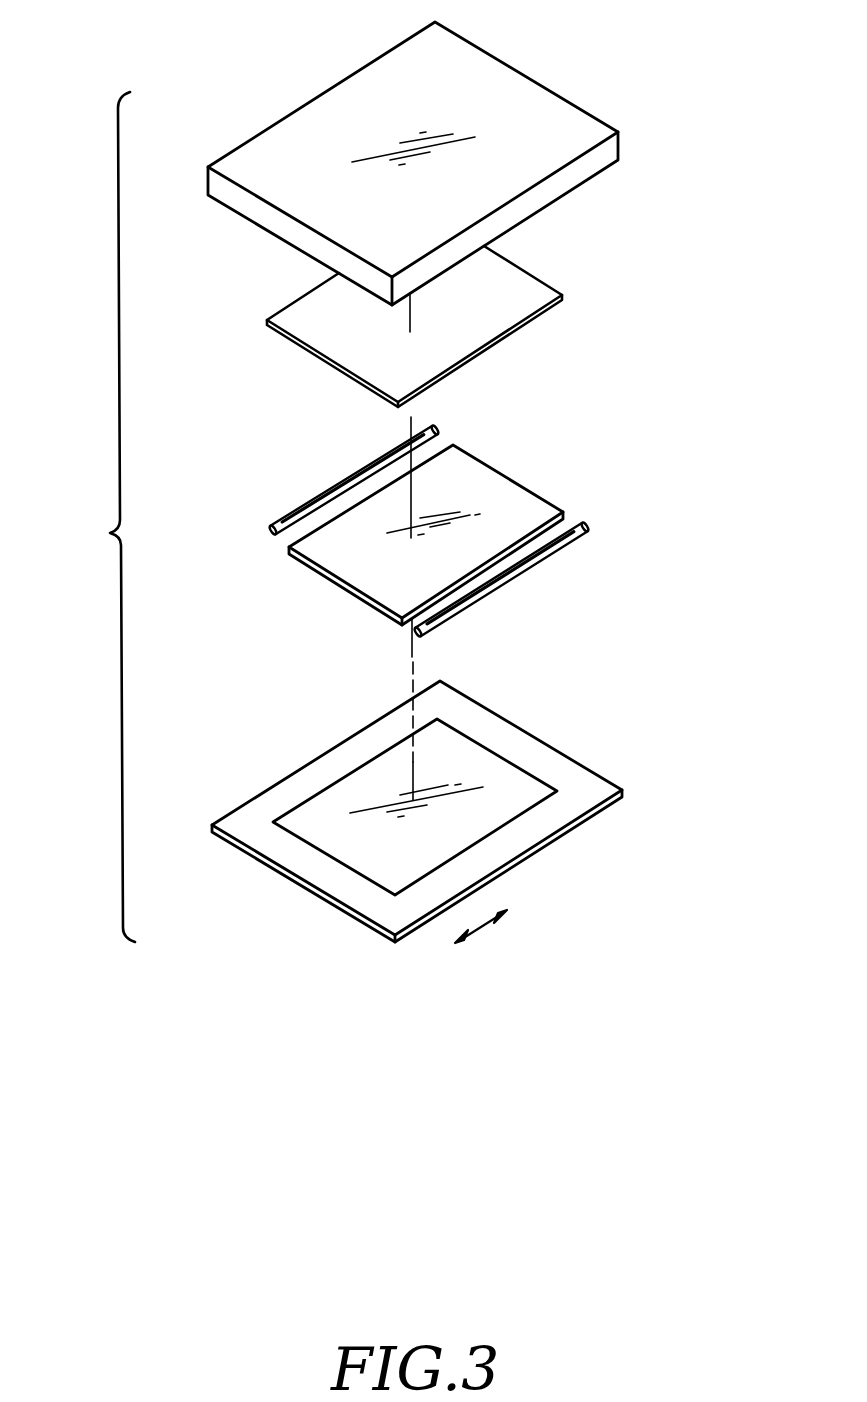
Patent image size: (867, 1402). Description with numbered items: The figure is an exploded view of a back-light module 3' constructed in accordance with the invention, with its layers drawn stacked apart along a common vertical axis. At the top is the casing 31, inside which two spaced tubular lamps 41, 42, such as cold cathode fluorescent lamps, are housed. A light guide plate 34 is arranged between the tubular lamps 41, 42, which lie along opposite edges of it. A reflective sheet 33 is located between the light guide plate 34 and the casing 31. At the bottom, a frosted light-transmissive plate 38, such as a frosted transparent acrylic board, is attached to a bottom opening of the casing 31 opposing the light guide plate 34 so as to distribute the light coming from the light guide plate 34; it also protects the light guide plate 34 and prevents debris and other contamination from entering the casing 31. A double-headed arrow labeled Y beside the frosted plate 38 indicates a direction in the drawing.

The back-light module 3' is at (102, 517).
The casing 31 is at (553, 110).
The reflective sheet 33 is at (525, 295).
The light guide plate 34 is at (485, 482).
The frosted light-transmissive plate 38 is at (527, 803).
The tubular lamp 41 is at (368, 467).
The tubular lamp 42 is at (558, 545).
The Y direction Y is at (483, 923).